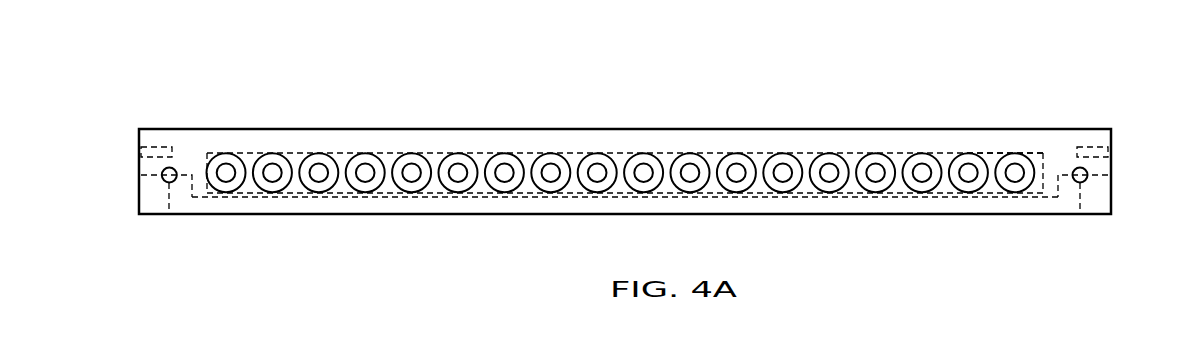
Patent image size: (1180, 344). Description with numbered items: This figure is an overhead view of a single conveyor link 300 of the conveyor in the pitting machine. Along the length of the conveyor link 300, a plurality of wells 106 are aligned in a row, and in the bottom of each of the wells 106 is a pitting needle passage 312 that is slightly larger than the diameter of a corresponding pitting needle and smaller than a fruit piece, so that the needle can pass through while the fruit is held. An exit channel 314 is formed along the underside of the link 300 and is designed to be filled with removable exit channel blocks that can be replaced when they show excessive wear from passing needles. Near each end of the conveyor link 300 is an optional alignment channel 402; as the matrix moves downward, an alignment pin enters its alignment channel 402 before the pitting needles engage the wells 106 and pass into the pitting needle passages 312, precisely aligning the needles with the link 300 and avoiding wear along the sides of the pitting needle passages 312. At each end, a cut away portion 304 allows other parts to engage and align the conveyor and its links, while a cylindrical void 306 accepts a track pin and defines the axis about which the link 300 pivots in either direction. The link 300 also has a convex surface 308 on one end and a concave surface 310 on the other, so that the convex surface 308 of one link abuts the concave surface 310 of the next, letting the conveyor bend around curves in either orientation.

The conveyor link 300 is at (252, 78).
The wells 106 is at (621, 165).
The cut away portion 304 is at (152, 187).
The cylindrical void 306 is at (147, 153).
The convex surface 308 is at (362, 118).
The concave surface 310 is at (361, 226).
The pitting needle passage 312 is at (923, 173).
The exit channel 314 is at (993, 153).
The alignment channel 402 is at (167, 182).